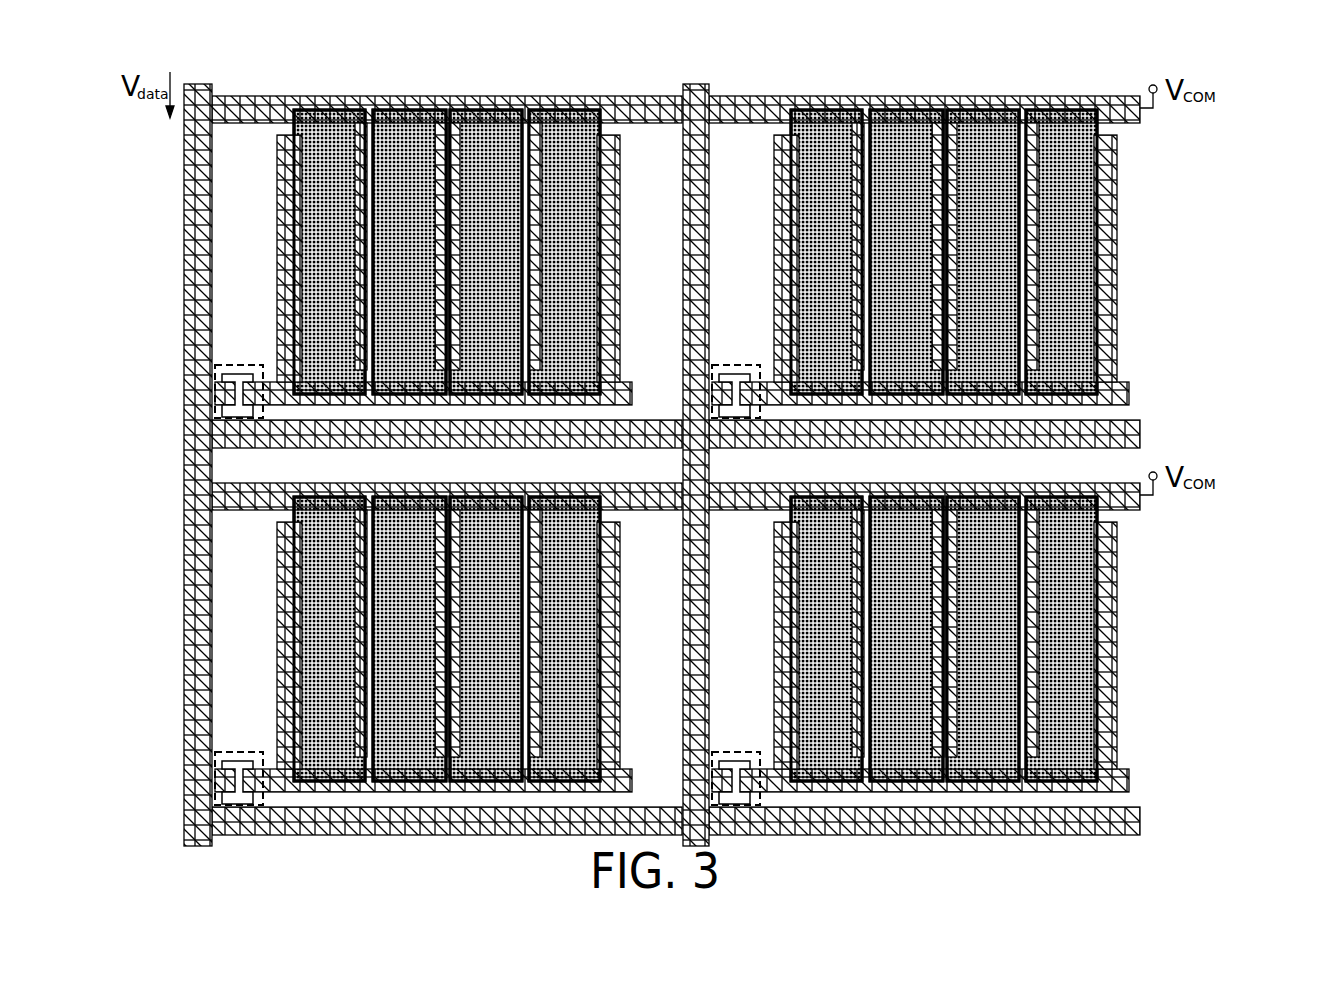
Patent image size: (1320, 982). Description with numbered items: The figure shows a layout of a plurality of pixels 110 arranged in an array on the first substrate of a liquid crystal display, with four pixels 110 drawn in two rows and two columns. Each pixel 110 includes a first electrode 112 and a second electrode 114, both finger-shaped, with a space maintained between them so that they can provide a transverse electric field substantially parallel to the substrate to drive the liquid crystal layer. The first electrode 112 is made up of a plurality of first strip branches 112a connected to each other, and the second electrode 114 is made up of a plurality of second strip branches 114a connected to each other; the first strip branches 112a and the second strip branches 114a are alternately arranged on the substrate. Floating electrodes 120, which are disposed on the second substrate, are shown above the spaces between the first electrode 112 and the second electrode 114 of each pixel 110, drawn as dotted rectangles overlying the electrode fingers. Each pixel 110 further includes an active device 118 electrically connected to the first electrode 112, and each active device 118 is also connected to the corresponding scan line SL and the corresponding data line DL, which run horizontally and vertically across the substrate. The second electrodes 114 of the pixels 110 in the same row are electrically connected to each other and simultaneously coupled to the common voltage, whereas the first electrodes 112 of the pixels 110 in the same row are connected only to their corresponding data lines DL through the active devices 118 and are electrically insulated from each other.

The pixel 110 is at (1240, 222).
The first electrode 112 is at (530, 406).
The first strip branch 112a is at (290, 242).
The second electrode 114 is at (447, 130).
The second strip branch 114a is at (372, 188).
The active device 118 is at (258, 420).
The floating electrode 120 is at (334, 133).
The data line DL is at (190, 202).
The scan line SL is at (605, 425).